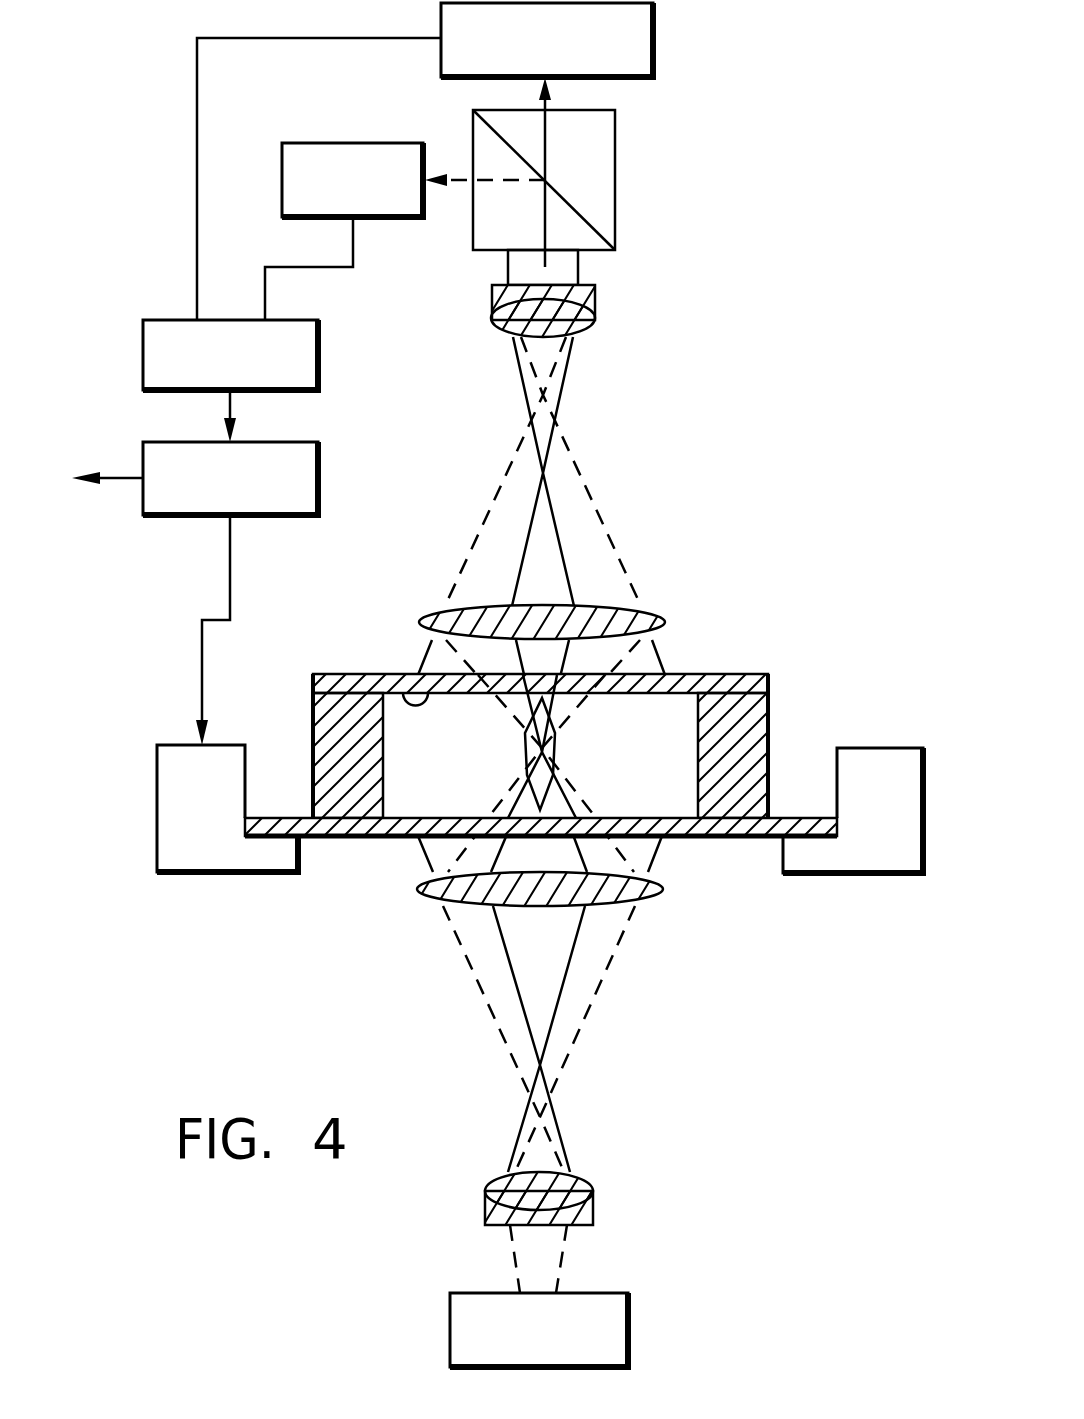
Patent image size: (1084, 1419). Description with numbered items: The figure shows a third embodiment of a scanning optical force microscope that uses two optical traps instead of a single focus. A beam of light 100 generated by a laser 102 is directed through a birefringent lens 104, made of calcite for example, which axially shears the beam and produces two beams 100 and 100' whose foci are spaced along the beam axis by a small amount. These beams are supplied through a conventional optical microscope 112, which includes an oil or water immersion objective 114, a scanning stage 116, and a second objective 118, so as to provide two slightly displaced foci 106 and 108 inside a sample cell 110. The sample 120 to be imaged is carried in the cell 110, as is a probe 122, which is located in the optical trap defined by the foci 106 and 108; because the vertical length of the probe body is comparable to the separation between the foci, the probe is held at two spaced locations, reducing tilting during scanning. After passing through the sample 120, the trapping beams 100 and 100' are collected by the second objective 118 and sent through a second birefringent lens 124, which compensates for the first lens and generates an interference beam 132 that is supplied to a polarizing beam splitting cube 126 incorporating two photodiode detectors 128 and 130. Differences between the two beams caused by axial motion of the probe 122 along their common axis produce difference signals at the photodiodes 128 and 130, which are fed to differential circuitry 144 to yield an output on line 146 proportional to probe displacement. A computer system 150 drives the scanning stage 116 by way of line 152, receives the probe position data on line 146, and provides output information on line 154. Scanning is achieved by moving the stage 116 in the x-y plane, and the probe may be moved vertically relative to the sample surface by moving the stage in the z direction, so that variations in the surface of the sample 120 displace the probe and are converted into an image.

The beam of light 100 is at (573, 815).
The second beam 100' is at (556, 754).
The laser 102 is at (628, 1340).
The birefringent lens 104 is at (585, 1173).
The focus 106 is at (545, 753).
The focus 108 is at (548, 728).
The sample cell 110 is at (728, 662).
The optical microscope 112 is at (775, 912).
The immersion objective 114 is at (640, 903).
The scanning stage 116 is at (263, 872).
The second objective 118 is at (663, 617).
The sample 120 is at (400, 692).
The probe 122 is at (532, 798).
The second birefringent lens 124 is at (595, 305).
The polarizing beam splitting cube 126 is at (615, 190).
The photodiode detector 128 is at (653, 53).
The photodiode detector 130 is at (373, 143).
The interference beam 132 is at (578, 270).
The differential circuitry 144 is at (318, 365).
The output line 146 is at (230, 400).
The computer system 150 is at (318, 490).
The line 152 is at (230, 575).
The output line 154 is at (125, 478).